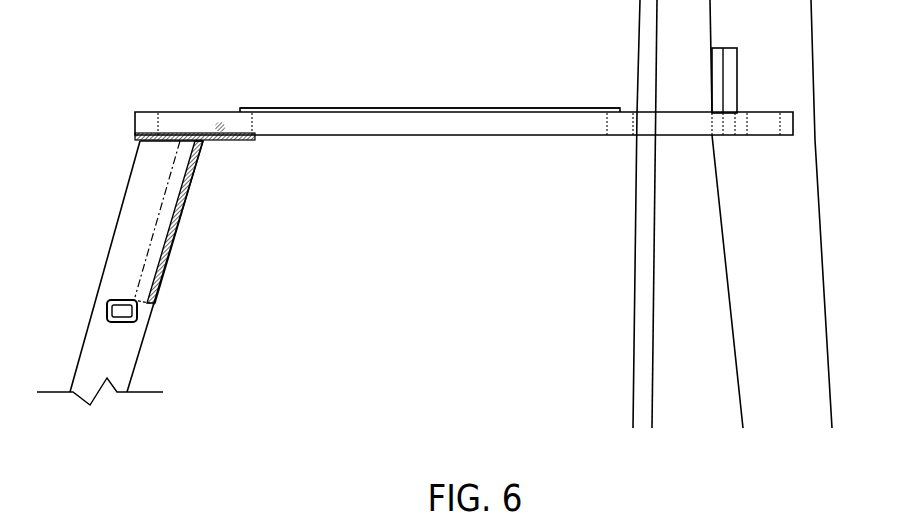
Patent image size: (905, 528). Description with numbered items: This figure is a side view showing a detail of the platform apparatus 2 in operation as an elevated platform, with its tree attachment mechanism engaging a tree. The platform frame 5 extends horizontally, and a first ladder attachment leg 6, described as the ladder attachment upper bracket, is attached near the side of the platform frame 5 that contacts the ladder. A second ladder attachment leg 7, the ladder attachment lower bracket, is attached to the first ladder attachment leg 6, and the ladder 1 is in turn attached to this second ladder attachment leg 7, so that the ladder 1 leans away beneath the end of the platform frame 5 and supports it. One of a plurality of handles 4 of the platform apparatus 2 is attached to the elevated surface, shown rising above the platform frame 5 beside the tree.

The ladder 1 is at (158, 357).
The platform apparatus 2 is at (368, 80).
The handle 4 is at (733, 68).
The platform frame 5 is at (483, 127).
The first ladder attachment leg 6 is at (190, 133).
The second ladder attachment leg 7 is at (150, 144).